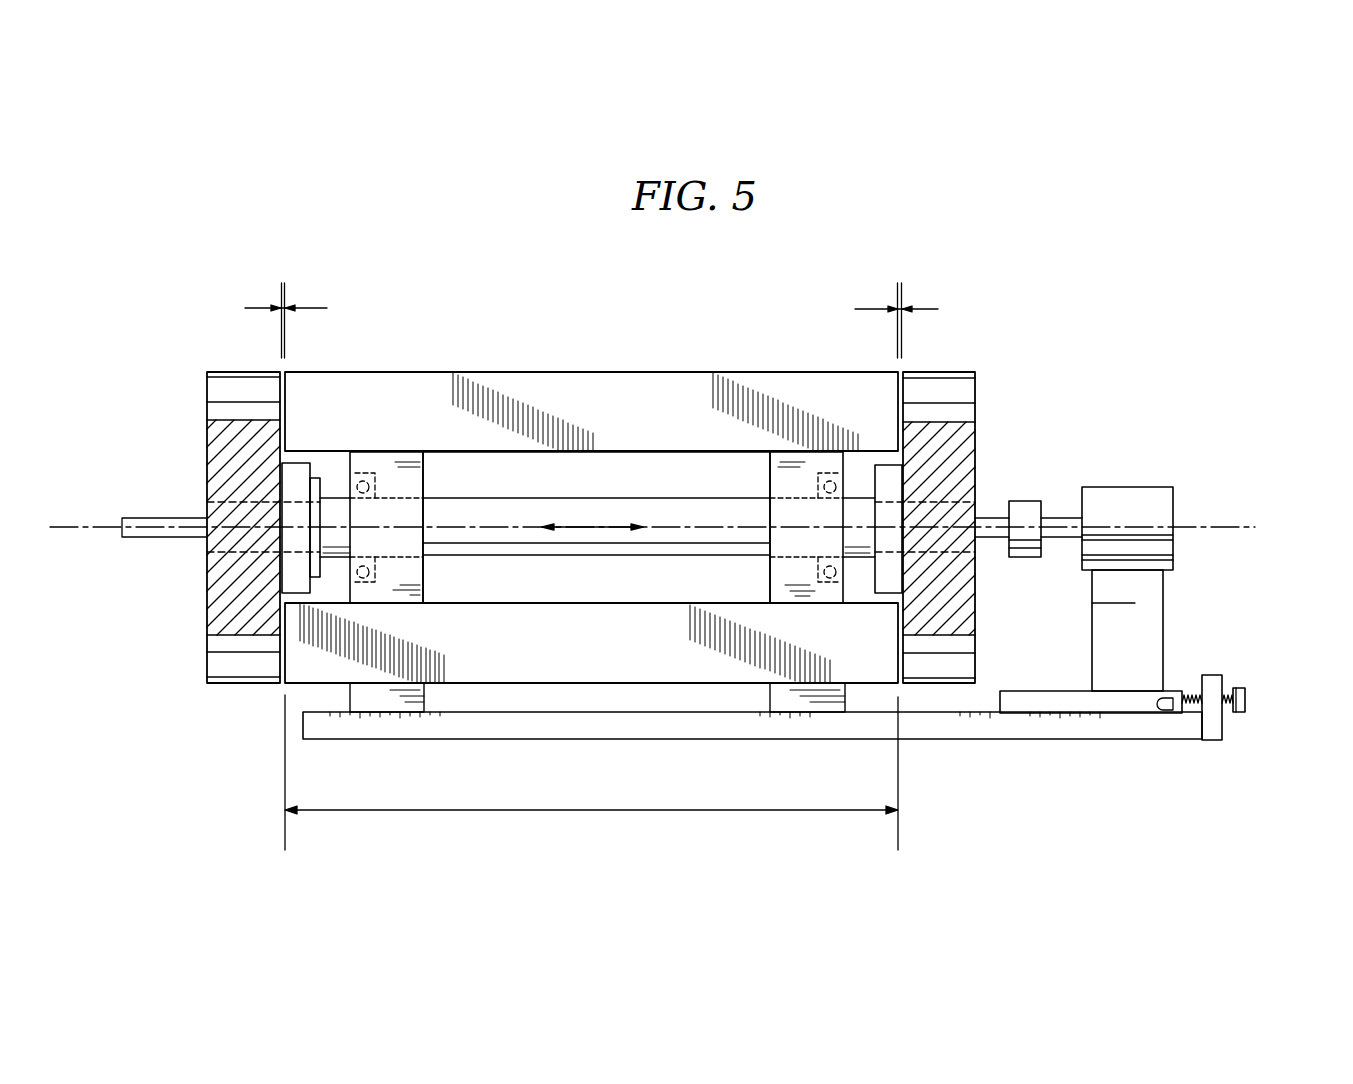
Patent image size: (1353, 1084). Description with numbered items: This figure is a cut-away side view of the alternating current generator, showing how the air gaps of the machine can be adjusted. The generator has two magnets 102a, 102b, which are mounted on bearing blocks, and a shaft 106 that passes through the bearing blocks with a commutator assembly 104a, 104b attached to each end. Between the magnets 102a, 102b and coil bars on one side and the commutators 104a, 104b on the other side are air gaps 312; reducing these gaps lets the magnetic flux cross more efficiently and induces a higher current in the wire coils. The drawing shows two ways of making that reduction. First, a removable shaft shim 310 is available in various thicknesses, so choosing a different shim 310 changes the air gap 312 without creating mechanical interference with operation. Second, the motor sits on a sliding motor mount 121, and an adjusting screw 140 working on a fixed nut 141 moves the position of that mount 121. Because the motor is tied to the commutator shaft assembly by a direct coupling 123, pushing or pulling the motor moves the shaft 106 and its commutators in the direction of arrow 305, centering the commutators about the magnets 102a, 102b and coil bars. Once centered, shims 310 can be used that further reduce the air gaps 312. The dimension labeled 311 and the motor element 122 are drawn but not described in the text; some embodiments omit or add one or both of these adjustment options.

The magnet 102a is at (790, 389).
The magnet 102b is at (583, 668).
The commutator assembly 104a is at (232, 657).
The commutator assembly 104b is at (955, 385).
The shaft 106 is at (468, 494).
The arrow 305 is at (590, 527).
The shaft shim 310 is at (323, 476).
The housing length 311 is at (545, 810).
The air gap 312 is at (245, 308).
The sliding motor mount 121 is at (1140, 593).
The motor 122 is at (1150, 495).
The direct coupling 123 is at (1025, 508).
The adjusting screw 140 is at (1239, 723).
The fixed nut 141 is at (1174, 684).